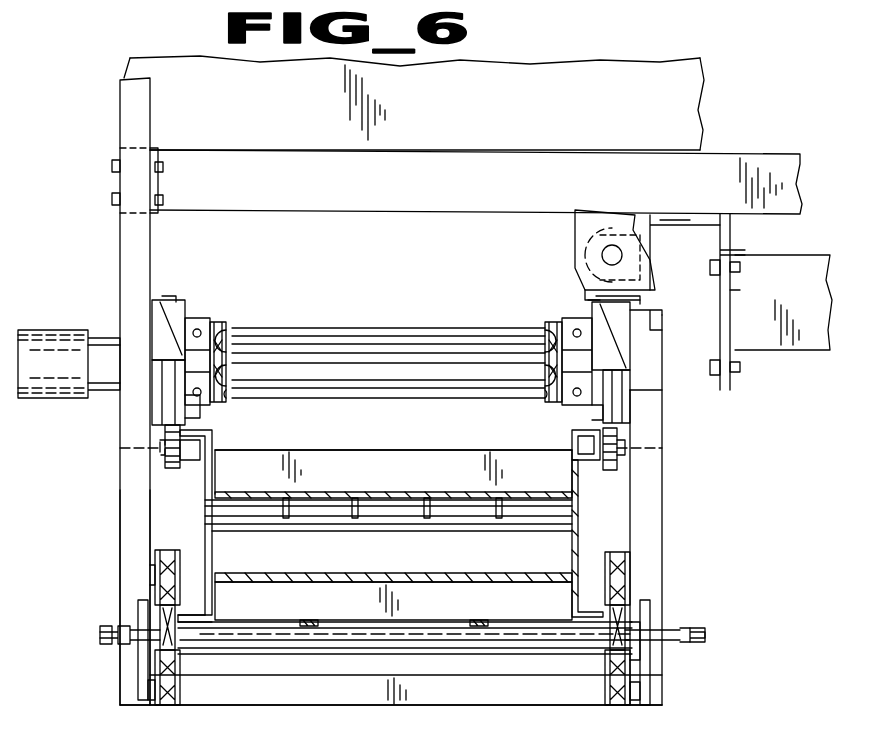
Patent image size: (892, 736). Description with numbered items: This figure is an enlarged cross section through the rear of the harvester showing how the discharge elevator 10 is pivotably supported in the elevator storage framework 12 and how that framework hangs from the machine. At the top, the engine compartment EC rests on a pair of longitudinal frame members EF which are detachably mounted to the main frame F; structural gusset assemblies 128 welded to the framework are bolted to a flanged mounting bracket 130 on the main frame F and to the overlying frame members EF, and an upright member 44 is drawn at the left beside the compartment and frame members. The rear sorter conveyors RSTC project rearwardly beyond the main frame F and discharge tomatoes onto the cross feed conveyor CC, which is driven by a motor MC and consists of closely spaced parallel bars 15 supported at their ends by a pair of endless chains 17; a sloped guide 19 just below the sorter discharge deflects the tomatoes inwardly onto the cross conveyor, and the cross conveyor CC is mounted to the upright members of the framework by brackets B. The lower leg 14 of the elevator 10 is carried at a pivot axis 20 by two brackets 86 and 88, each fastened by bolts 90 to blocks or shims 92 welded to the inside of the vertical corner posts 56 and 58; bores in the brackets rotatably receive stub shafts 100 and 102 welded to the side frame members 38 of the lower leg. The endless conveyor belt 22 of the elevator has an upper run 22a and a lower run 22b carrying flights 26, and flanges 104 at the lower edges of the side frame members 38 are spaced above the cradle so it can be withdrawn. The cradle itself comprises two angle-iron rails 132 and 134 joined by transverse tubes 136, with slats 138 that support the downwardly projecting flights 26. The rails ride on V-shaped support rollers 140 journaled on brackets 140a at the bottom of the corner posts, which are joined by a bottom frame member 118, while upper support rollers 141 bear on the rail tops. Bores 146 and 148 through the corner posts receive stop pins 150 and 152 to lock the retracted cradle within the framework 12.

The discharge elevator 10 is at (195, 477).
The elevator storage framework 12 is at (110, 534).
The lower leg 14 is at (595, 504).
The parallel bars 15 is at (286, 372).
The endless chains 17 is at (220, 330).
The sloped guide 19 is at (588, 312).
The pivot axis 20 is at (655, 448).
The endless conveyor belt 22 is at (268, 488).
The upper run 22a is at (322, 488).
The lower run 22b is at (308, 572).
The flights 26 is at (437, 477).
The side frame members 38 is at (205, 497).
The vertical post 44 is at (112, 111).
The vertical corner post 56 is at (662, 527).
The vertical corner post 58 is at (120, 507).
The bracket 86 is at (605, 415).
The bracket 88 is at (165, 418).
The bolts 90 is at (222, 404).
The blocks or shims 92 is at (150, 400).
The stub shaft 100 is at (620, 452).
The stub shaft 102 is at (165, 453).
The flanges 104 is at (188, 614).
The bottom frame member 118 is at (346, 699).
The structural gusset assemblies 128 is at (718, 222).
The flanged mounting bracket 130 is at (722, 293).
The cradle rail 132 is at (650, 658).
The cradle rail 134 is at (160, 645).
The transverse tubes 136 is at (344, 655).
The slats 138 is at (312, 620).
The support rollers 140 is at (180, 690).
The brackets 140a is at (148, 688).
The upper support rollers 141 is at (168, 550).
The bore 146 is at (652, 628).
The bore 148 is at (138, 650).
The stop pin 150 is at (695, 642).
The stop pin 152 is at (110, 624).
The engine compartment EC is at (433, 107).
The longitudinal frame members EF is at (426, 187).
The rear sorter conveyors RSTC is at (585, 232).
The brackets B is at (158, 298).
The motor MC is at (38, 332).
The cross feed conveyor CC is at (372, 328).
The main frame F is at (757, 331).